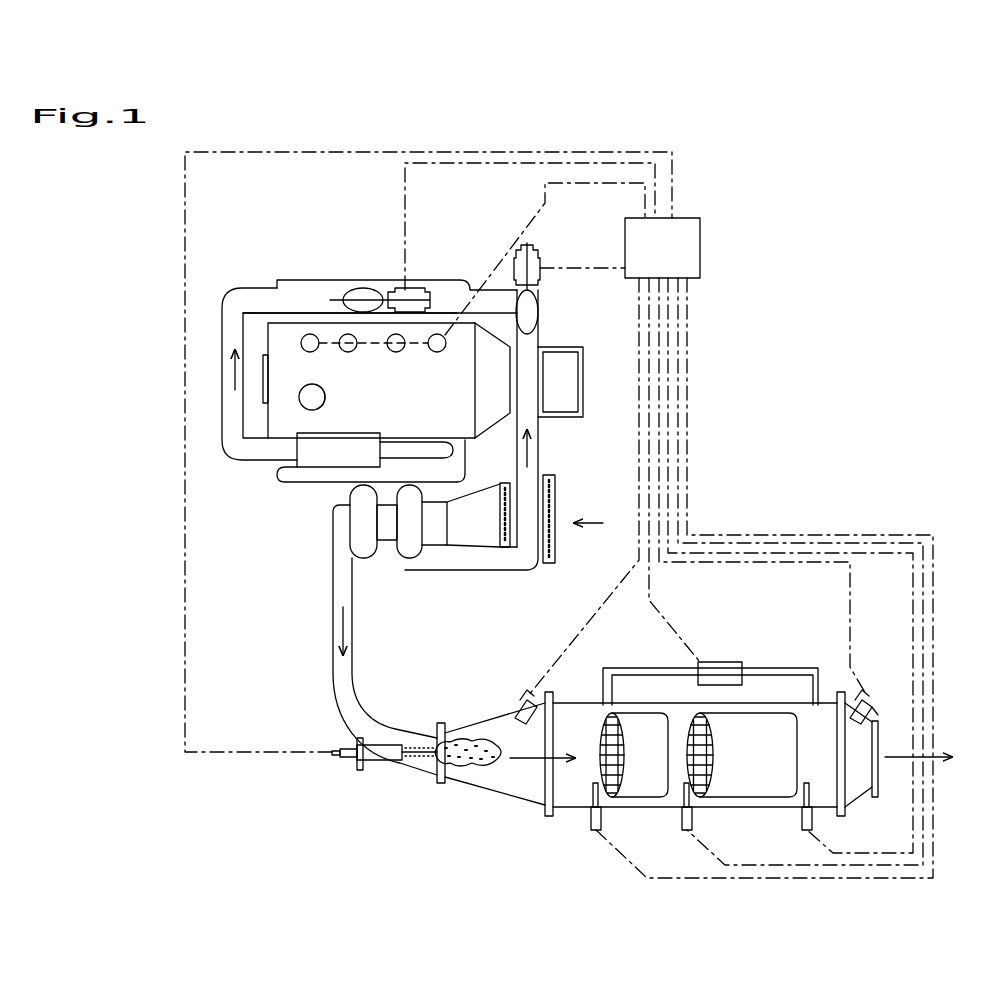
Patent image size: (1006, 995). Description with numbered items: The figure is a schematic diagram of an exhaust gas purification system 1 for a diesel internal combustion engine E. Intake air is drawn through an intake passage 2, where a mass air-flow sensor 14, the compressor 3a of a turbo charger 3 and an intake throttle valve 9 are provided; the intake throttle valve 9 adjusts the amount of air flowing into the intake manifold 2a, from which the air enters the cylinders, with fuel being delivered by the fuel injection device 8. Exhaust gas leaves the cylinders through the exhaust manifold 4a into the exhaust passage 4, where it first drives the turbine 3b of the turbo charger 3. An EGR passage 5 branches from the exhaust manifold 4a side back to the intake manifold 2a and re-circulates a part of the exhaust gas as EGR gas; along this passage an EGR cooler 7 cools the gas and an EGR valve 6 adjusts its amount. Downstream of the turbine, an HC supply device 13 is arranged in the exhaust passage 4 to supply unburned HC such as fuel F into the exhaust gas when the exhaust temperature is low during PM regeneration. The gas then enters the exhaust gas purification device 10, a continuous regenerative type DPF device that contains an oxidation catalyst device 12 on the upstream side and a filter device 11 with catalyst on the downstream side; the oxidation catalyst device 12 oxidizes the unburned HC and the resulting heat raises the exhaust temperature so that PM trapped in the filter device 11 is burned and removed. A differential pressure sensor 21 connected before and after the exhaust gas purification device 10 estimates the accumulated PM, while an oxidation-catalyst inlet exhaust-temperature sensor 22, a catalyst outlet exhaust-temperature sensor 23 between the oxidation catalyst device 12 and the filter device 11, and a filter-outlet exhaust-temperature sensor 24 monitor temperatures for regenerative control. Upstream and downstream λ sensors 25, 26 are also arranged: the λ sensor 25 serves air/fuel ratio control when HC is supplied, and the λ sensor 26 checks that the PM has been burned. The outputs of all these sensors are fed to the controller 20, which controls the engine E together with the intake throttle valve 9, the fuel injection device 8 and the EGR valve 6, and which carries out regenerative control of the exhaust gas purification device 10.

The exhaust gas purification system 1 is at (742, 408).
The diesel internal combustion engine E is at (330, 370).
The intake passage 2 is at (515, 568).
The intake manifold 2a is at (323, 282).
The turbo charger 3 is at (395, 550).
The compressor 3a is at (415, 555).
The turbine 3b is at (360, 548).
The exhaust passage 4 is at (333, 675).
The exhaust manifold 4a is at (323, 477).
The EGR passage 5 is at (222, 427).
The EGR valve 6 is at (363, 298).
The EGR cooler 7 is at (315, 452).
The fuel injection device 8 is at (440, 338).
The intake throttle valve 9 is at (540, 312).
The exhaust gas purification device 10 is at (633, 810).
The filter device with catalyst 11 is at (748, 750).
The oxidation catalyst device 12 is at (650, 750).
The HC supply device 13 is at (386, 765).
The mass air-flow sensor 14 is at (497, 520).
The controller 20 is at (690, 240).
The differential pressure sensor 21 is at (715, 662).
The oxidation-catalyst inlet exhaust-temperature sensor 22 is at (596, 833).
The catalyst outlet exhaust-temperature sensor 23 is at (687, 833).
The filter-outlet exhaust-temperature sensor 24 is at (807, 833).
The λ sensor 25 is at (515, 707).
The λ sensor 26 is at (868, 706).
The fuel F is at (470, 770).